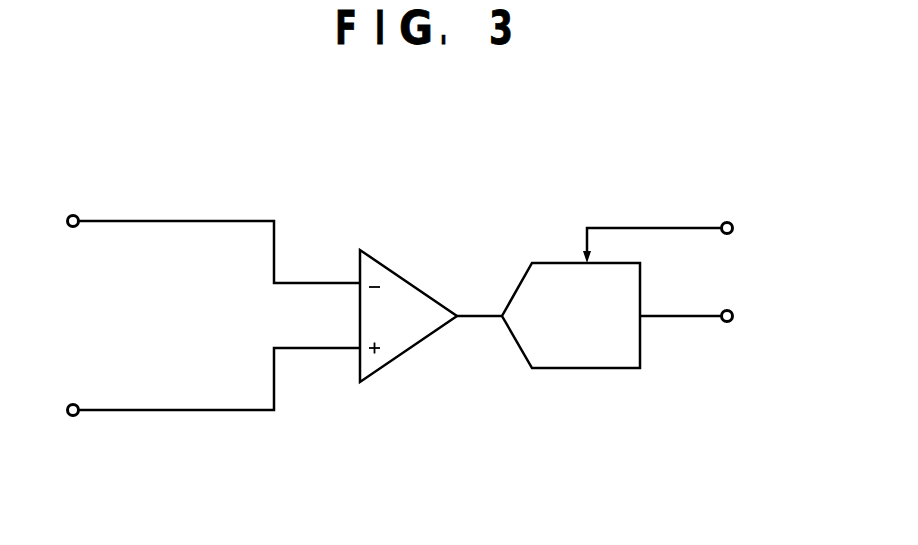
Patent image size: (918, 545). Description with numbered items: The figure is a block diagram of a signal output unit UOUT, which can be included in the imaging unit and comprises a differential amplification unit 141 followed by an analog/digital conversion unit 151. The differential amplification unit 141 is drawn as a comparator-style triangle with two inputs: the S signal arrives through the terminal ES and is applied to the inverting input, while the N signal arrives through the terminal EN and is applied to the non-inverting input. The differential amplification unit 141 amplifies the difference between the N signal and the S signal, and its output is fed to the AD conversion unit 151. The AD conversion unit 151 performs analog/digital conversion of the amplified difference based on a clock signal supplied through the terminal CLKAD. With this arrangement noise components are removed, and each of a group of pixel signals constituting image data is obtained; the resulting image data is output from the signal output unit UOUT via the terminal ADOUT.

The comparator 141 is at (400, 268).
The analog/digital conversion unit 151 is at (659, 290).
The signal output unit UOUT is at (163, 128).
The terminal ES is at (198, 246).
The terminal EN is at (198, 386).
The terminal CLKAD is at (697, 238).
The terminal ADOUT is at (728, 314).